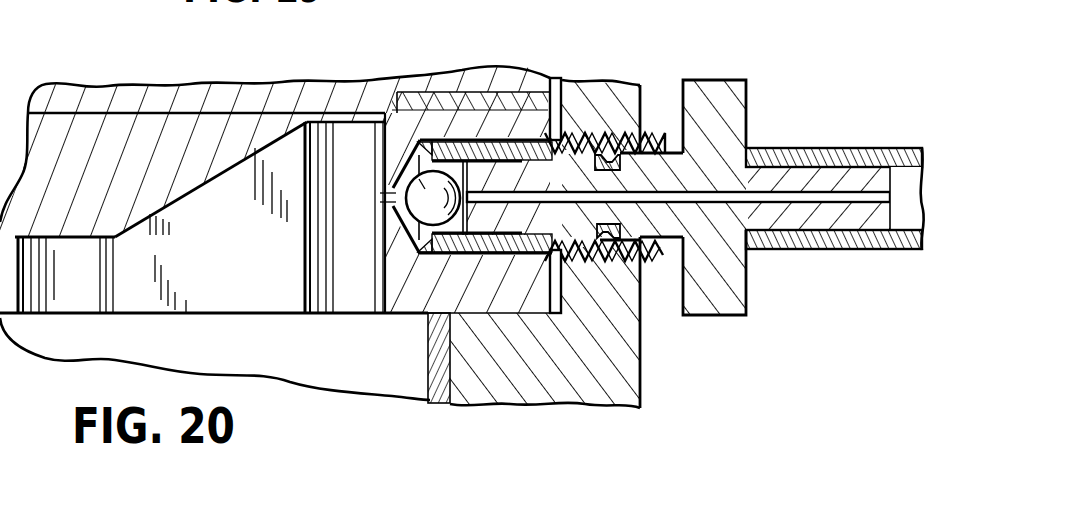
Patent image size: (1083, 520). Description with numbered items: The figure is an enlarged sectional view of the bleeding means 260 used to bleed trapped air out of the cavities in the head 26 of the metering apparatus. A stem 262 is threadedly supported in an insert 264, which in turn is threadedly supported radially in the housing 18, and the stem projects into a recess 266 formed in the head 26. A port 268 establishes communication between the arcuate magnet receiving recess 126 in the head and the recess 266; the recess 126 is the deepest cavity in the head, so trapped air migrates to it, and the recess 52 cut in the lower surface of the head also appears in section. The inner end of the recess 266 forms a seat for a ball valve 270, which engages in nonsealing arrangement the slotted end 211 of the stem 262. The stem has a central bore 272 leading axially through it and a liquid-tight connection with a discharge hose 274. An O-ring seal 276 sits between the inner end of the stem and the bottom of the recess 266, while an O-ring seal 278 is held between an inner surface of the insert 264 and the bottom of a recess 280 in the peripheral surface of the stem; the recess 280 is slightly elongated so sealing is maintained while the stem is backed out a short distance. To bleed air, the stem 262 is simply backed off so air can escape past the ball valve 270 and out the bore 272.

The housing 18 is at (625, 381).
The head 26 is at (125, 127).
The recess 52 is at (83, 298).
The arcuate recess 126 is at (345, 298).
The passage 211 is at (460, 143).
The bleeding means 260 is at (791, 90).
The stem 262 is at (718, 317).
The insert 264 is at (654, 133).
The recess 266 is at (503, 137).
The port 268 is at (392, 197).
The ball valve 270 is at (412, 160).
The central bore 272 is at (809, 200).
The discharge hose 274 is at (866, 252).
The O-ring seal 276 is at (425, 138).
The O-ring seal 278 is at (610, 152).
The recess 280 is at (600, 136).